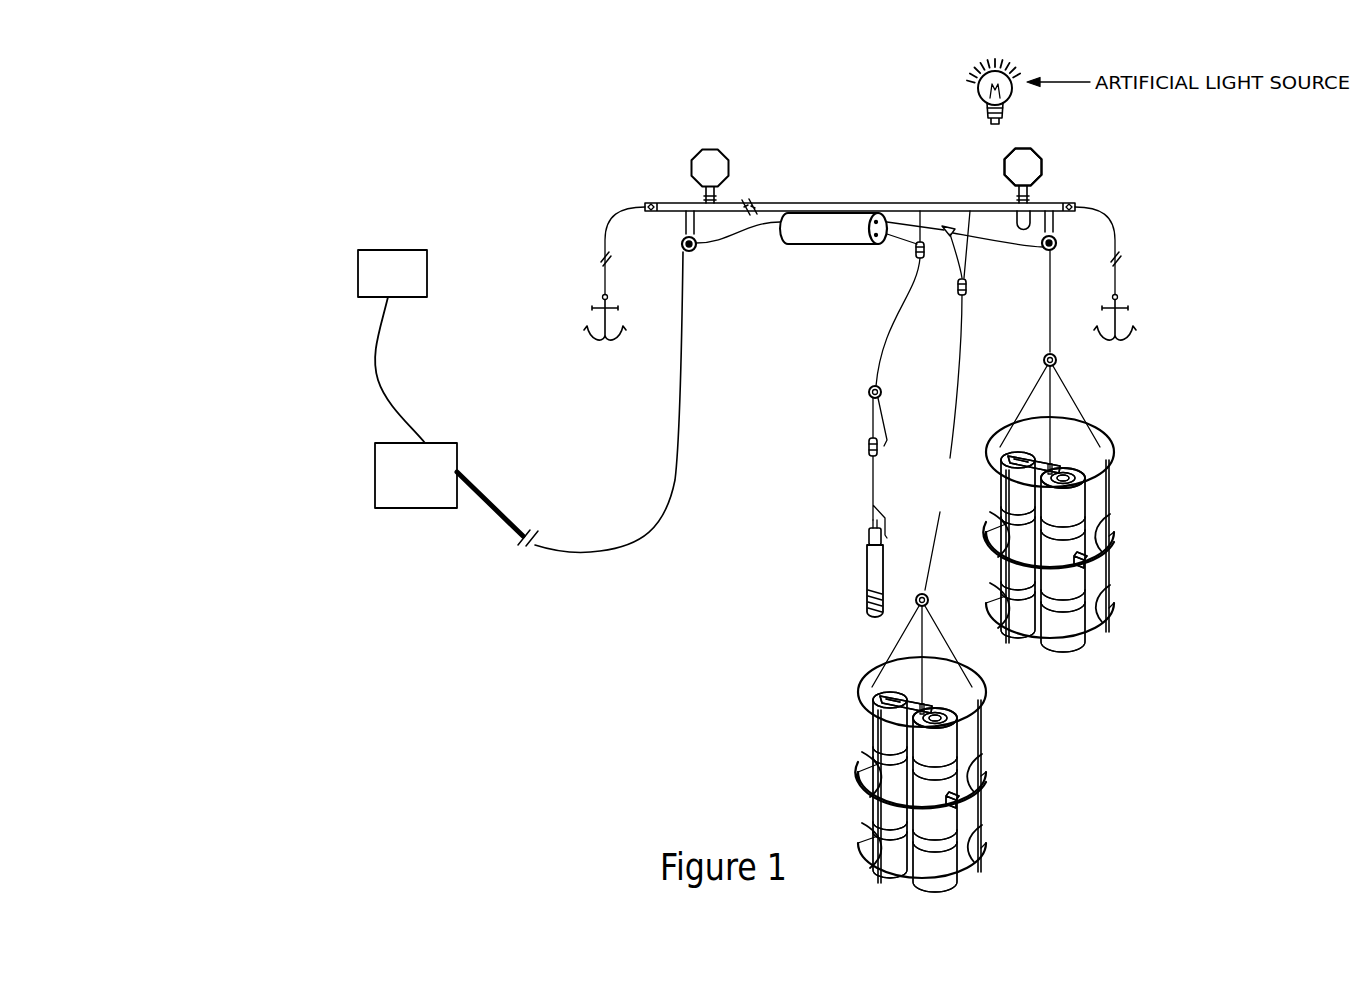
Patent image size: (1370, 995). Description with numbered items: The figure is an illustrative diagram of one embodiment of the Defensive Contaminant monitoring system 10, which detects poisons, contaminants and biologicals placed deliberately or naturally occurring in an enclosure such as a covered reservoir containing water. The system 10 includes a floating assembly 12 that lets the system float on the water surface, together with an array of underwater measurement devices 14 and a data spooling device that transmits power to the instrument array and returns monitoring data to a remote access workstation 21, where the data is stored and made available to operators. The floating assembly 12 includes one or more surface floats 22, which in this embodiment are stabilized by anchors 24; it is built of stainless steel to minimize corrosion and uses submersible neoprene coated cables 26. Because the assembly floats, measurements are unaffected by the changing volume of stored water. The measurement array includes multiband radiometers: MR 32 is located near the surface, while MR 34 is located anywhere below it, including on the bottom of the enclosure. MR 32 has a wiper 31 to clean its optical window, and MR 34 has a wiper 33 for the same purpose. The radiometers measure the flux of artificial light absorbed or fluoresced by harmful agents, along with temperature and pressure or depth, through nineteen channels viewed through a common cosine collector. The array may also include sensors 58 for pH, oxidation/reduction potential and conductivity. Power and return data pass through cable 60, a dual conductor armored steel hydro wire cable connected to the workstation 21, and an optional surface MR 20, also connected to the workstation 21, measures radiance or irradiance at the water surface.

The DEFCON system 10 is at (259, 378).
The floating assembly 12 is at (670, 188).
The array of underwater measurement devices 14 is at (1058, 670).
The surface MR 20 is at (329, 242).
The remote access workstation 21 is at (368, 523).
The surface float 22 is at (1060, 156).
The anchor 24 is at (1157, 311).
The neoprene coated cable 26 is at (908, 216).
The wiper 31 is at (1057, 503).
The multiband radiometer 32 is at (1075, 548).
The wiper 33 is at (929, 743).
The multiband radiometer 34 is at (958, 808).
The sensor 58 is at (859, 582).
The cable 60 is at (544, 557).